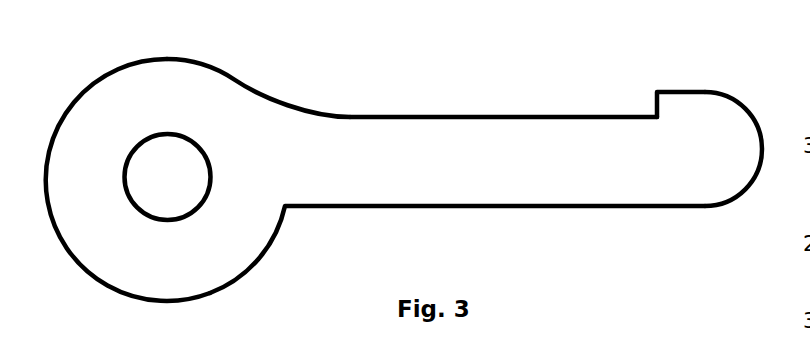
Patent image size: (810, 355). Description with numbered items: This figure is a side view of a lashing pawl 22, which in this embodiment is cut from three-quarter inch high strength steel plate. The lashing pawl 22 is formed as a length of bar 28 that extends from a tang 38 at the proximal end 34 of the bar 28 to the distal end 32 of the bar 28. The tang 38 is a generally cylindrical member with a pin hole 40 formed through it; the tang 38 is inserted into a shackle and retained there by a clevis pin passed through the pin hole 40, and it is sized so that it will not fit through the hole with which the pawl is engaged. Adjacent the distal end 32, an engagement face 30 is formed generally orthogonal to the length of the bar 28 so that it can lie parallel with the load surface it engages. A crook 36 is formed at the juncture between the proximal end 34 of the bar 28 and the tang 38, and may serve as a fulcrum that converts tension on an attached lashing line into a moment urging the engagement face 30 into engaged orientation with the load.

The lashing pawl 22 is at (84, 50).
The bar 28 is at (512, 115).
The engagement face 30 is at (656, 100).
The distal end 32 is at (757, 125).
The proximal end 34 is at (300, 107).
The crook 36 is at (286, 208).
The tang 38 is at (204, 295).
The pin hole 40 is at (201, 149).